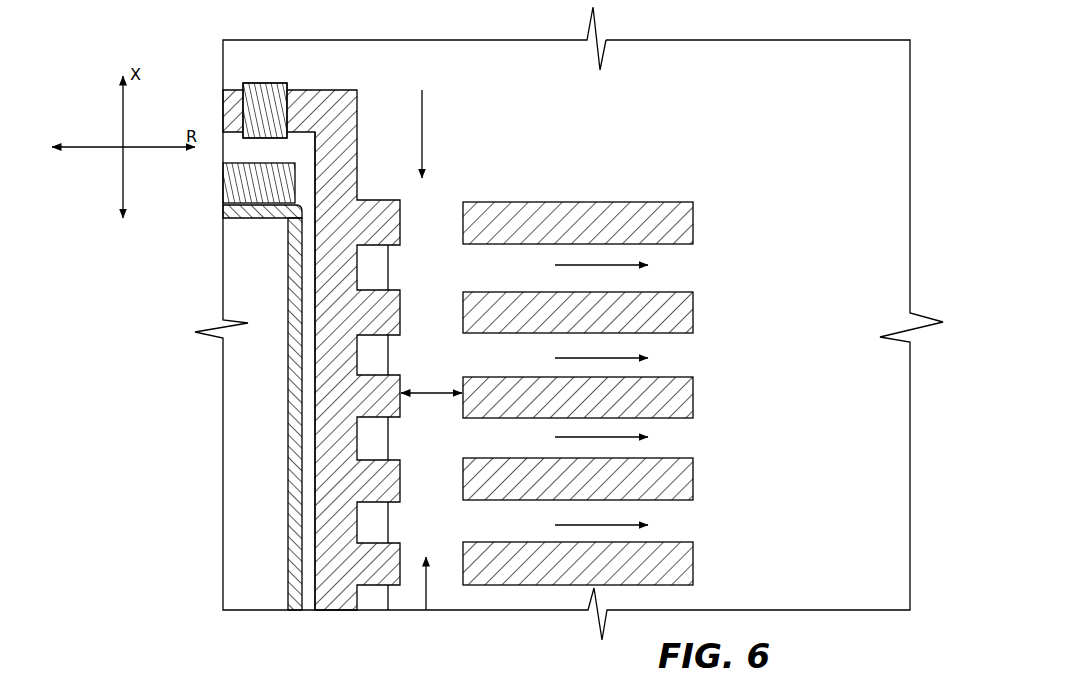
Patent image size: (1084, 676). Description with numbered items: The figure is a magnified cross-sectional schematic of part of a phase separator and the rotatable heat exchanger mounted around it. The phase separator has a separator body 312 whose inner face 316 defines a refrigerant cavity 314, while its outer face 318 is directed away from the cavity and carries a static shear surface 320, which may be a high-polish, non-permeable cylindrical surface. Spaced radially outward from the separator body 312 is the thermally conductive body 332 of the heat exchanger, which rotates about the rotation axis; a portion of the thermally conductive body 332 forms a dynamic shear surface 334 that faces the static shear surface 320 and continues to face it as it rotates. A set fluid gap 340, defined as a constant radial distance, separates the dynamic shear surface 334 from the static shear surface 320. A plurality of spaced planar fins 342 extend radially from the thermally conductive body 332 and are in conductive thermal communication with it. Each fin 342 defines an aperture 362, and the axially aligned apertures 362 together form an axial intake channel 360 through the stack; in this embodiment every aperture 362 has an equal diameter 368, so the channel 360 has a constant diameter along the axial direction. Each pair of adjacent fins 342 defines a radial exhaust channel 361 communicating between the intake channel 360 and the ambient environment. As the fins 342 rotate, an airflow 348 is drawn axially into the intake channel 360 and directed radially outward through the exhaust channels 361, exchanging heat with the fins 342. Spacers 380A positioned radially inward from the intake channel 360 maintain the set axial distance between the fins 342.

The separator body 312 is at (288, 493).
The refrigerant cavity 314 is at (242, 240).
The inner face 316 is at (288, 300).
The outer face 318 is at (305, 355).
The static shear surface 320 is at (302, 600).
The thermally conductive body 332 is at (348, 128).
The dynamic shear surface 334 is at (315, 415).
The fluid gap 340 is at (307, 230).
The fins 342 is at (693, 238).
The airflow 348 is at (422, 135).
The axial intake channel 360 is at (442, 208).
The radial exhaust channel 361 is at (475, 260).
The aperture 362 is at (470, 397).
The diameter 368 is at (433, 390).
The spacers 380A is at (372, 592).